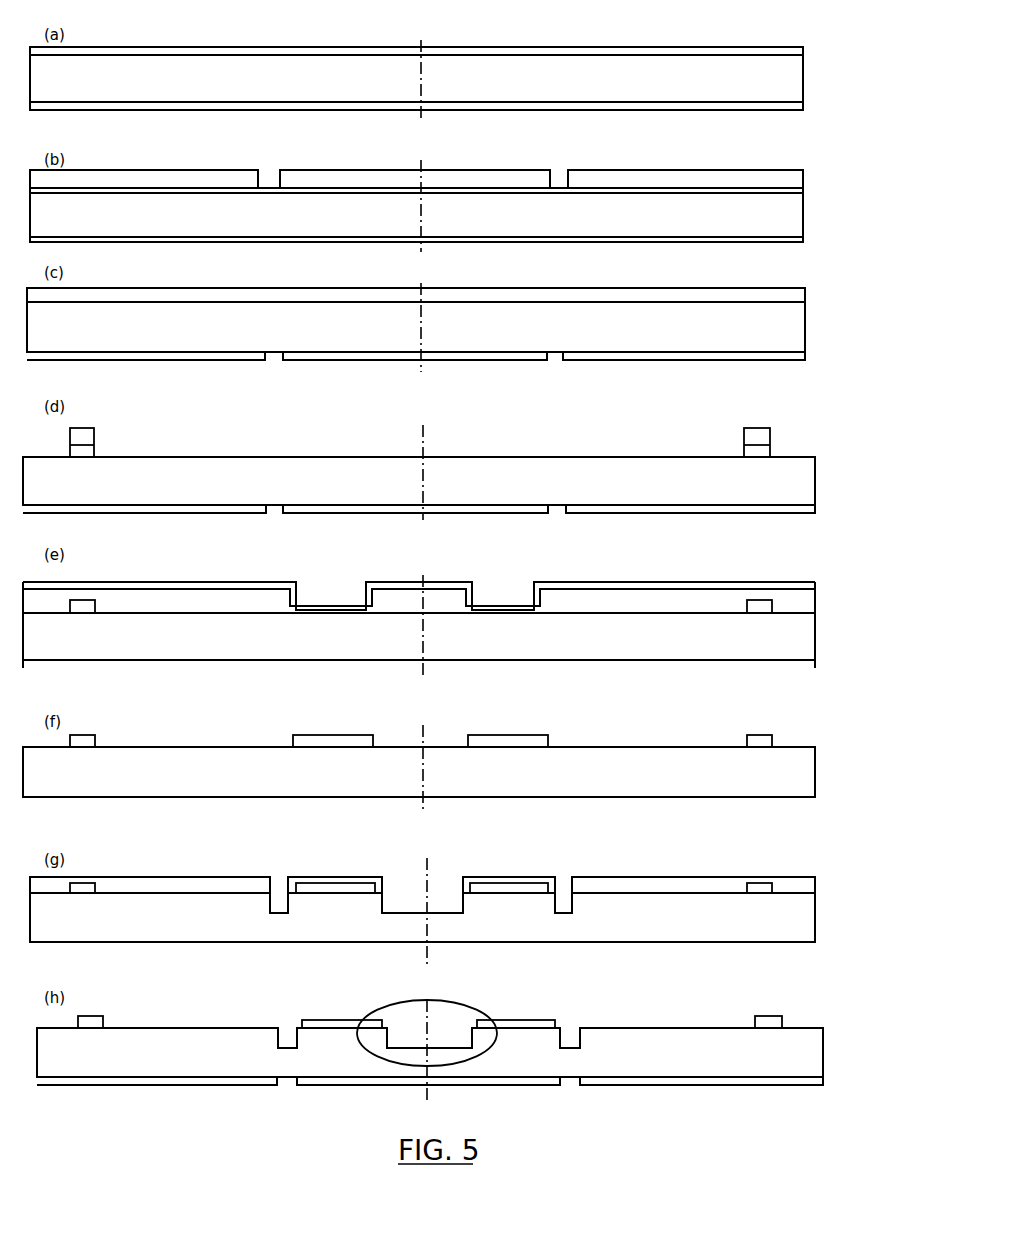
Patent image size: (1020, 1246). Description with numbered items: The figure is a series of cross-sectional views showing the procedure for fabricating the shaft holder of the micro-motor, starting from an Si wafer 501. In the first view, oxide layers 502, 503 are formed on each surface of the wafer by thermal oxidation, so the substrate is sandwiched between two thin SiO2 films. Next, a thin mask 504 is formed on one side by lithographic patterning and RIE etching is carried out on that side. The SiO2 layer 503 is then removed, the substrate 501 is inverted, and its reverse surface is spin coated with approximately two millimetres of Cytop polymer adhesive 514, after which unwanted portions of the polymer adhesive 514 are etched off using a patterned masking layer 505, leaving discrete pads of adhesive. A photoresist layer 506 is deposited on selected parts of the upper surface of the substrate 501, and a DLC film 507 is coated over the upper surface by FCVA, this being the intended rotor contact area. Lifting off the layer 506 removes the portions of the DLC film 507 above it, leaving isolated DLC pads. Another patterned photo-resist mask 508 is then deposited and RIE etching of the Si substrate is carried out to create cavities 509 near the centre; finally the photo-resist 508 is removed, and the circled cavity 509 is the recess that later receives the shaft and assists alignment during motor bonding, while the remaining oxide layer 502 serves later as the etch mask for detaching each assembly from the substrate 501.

The Si wafer 501 is at (478, 67).
The oxide layer 502 is at (570, 53).
The oxide layer 503 is at (582, 103).
The thin mask 504 is at (460, 177).
The patterned masking layer 505 is at (83, 435).
The photoresist layer 506 is at (193, 605).
The DLC film 507 is at (523, 607).
The patterned photo-resist mask 508 is at (585, 885).
The cavity 509 is at (377, 1055).
The Cytop polymer adhesive 514 is at (503, 297).